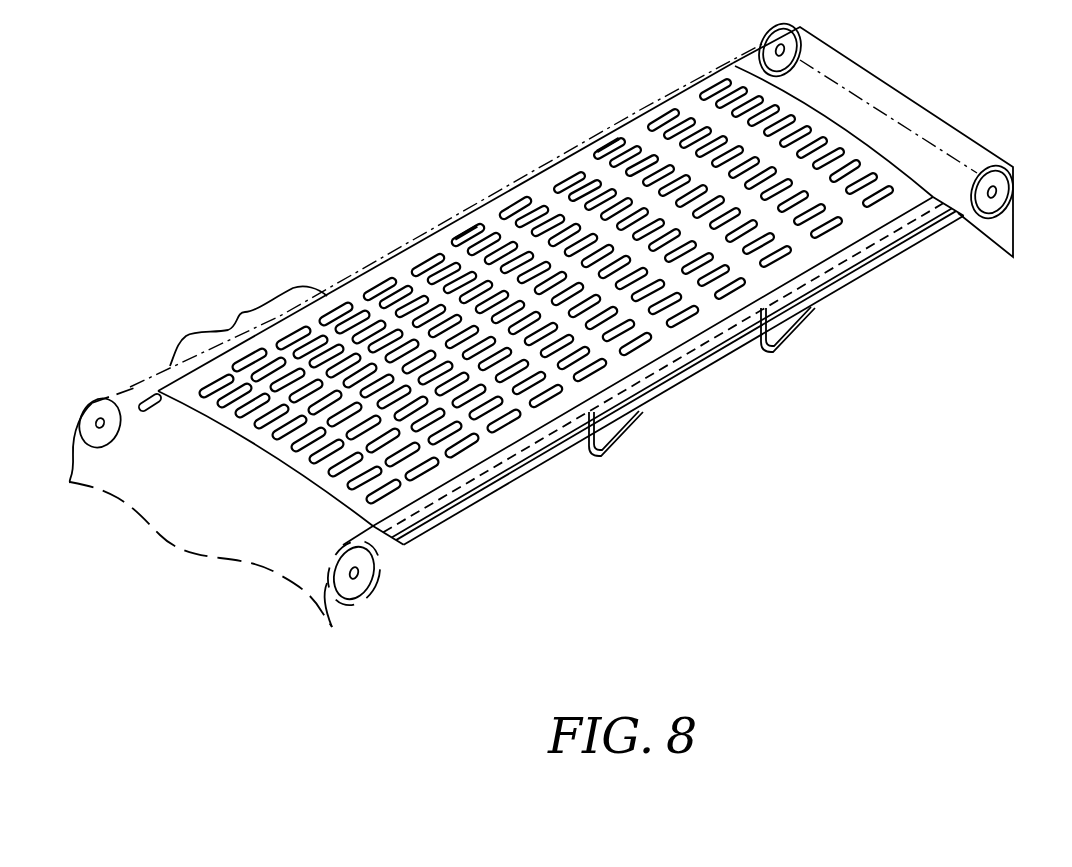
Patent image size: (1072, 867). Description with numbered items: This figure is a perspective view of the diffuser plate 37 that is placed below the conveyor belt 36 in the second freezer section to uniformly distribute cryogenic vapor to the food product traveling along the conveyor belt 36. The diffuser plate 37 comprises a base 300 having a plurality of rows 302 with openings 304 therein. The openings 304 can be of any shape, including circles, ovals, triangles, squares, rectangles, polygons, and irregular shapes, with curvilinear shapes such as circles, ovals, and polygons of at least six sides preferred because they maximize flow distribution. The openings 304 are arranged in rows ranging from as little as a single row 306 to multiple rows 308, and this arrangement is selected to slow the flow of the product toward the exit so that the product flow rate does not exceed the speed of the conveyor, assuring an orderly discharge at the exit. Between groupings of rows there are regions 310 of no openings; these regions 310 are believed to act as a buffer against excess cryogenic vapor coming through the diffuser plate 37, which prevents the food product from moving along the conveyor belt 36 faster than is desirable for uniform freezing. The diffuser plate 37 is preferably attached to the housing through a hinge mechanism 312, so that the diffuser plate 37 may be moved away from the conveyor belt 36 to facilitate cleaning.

The conveyor belt 36 is at (417, 245).
The diffuser plate 37 is at (513, 112).
The base 300 is at (380, 528).
The rows 302 is at (603, 144).
The openings 304 is at (477, 224).
The single row 306 is at (703, 82).
The multiple rows 308 is at (248, 322).
The regions of no openings 310 is at (638, 366).
The hinge mechanism 312 is at (148, 397).